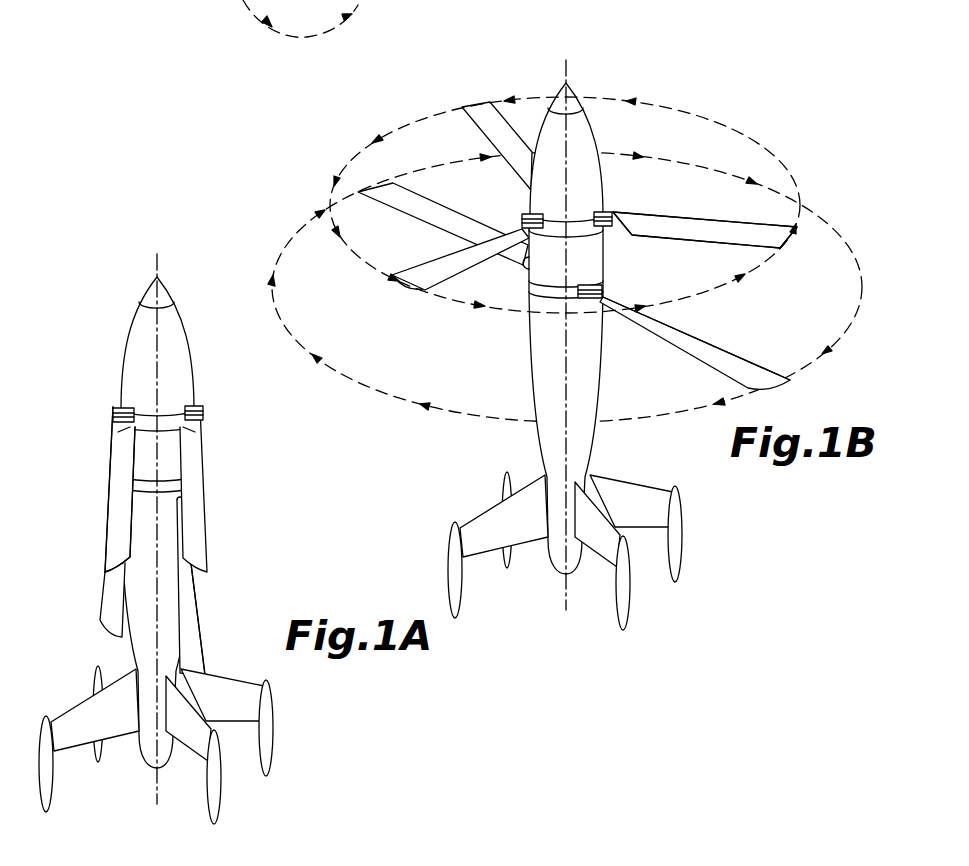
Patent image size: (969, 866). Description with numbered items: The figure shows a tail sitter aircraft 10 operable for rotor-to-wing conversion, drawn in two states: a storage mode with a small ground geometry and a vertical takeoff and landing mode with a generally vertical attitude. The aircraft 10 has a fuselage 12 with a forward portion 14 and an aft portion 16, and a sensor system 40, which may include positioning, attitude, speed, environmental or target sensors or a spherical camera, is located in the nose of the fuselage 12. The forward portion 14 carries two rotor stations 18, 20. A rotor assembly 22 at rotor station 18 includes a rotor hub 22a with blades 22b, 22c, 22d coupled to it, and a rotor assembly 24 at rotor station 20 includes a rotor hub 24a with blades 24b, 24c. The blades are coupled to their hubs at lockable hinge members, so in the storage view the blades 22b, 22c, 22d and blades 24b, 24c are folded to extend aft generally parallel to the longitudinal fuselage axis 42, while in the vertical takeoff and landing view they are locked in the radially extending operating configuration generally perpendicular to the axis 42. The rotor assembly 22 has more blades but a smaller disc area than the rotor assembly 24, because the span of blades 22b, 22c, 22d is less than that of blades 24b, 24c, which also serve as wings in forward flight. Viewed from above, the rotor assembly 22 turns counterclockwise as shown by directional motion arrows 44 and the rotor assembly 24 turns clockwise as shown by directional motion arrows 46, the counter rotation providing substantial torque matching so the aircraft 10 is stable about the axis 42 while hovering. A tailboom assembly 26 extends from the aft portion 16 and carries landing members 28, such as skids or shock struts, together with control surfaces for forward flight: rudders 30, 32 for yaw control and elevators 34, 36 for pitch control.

In FIG. 1B, the tail sitter aircraft 10 is at (679, 58).
In FIG. 1A, the tail sitter aircraft 10 is at (100, 364).
In FIG. 1B, the fuselage 12 is at (594, 134).
In FIG. 1A, the fuselage 12 is at (188, 343).
In FIG. 1B, the forward portion 14 is at (598, 245).
In FIG. 1A, the forward portion 14 is at (170, 448).
In FIG. 1B, the aft portion 16 is at (583, 442).
In FIG. 1A, the aft portion 16 is at (168, 632).
In FIG. 1B, the rotor station 18 is at (580, 218).
In FIG. 1A, the rotor station 18 is at (170, 417).
In FIG. 1B, the rotor station 20 is at (597, 283).
In FIG. 1A, the rotor station 20 is at (162, 492).
In FIG. 1B, the rotor assembly 22 is at (737, 226).
In FIG. 1A, the rotor assembly 22 is at (110, 452).
In FIG. 1B, the rotor hub 22a is at (530, 218).
In FIG. 1A, the rotor hub 22a is at (115, 413).
In FIG. 1B, the blade 22b is at (482, 108).
In FIG. 1A, the blade 22b is at (117, 511).
In FIG. 1B, the blade 22c is at (437, 260).
In FIG. 1A, the blade 22c is at (200, 483).
In FIG. 1B, the blade 22d is at (688, 222).
In FIG. 1B, the rotor assembly 24 is at (768, 367).
In FIG. 1A, the rotor assembly 24 is at (205, 612).
In FIG. 1B, the rotor hub 24a is at (560, 303).
In FIG. 1A, the rotor hub 24a is at (180, 498).
In FIG. 1B, the blade 24b is at (730, 347).
In FIG. 1A, the blade 24b is at (103, 612).
In FIG. 1B, the blade 24c is at (403, 200).
In FIG. 1A, the blade 24c is at (197, 590).
In FIG. 1B, the tailboom assembly 26 is at (685, 513).
In FIG. 1A, the tailboom assembly 26 is at (268, 712).
In FIG. 1B, the landing members 28 is at (680, 565).
In FIG. 1A, the landing members 28 is at (270, 761).
In FIG. 1B, the rudder 30 is at (610, 553).
In FIG. 1A, the rudder 30 is at (202, 750).
In FIG. 1B, the rudder 32 is at (523, 480).
In FIG. 1A, the rudder 32 is at (113, 675).
In FIG. 1B, the elevator 34 is at (483, 522).
In FIG. 1A, the elevator 34 is at (83, 712).
In FIG. 1B, the elevator 36 is at (643, 495).
In FIG. 1A, the elevator 36 is at (235, 692).
In FIG. 1B, the sensor system 40 is at (569, 90).
In FIG. 1A, the sensor system 40 is at (160, 280).
In FIG. 1B, the longitudinal fuselage axis 42 is at (563, 58).
In FIG. 1A, the longitudinal fuselage axis 42 is at (155, 256).
In FIG. 1B, the directional motion arrows 44 is at (432, 118).
In FIG. 1B, the directional motion arrows 46 is at (397, 398).